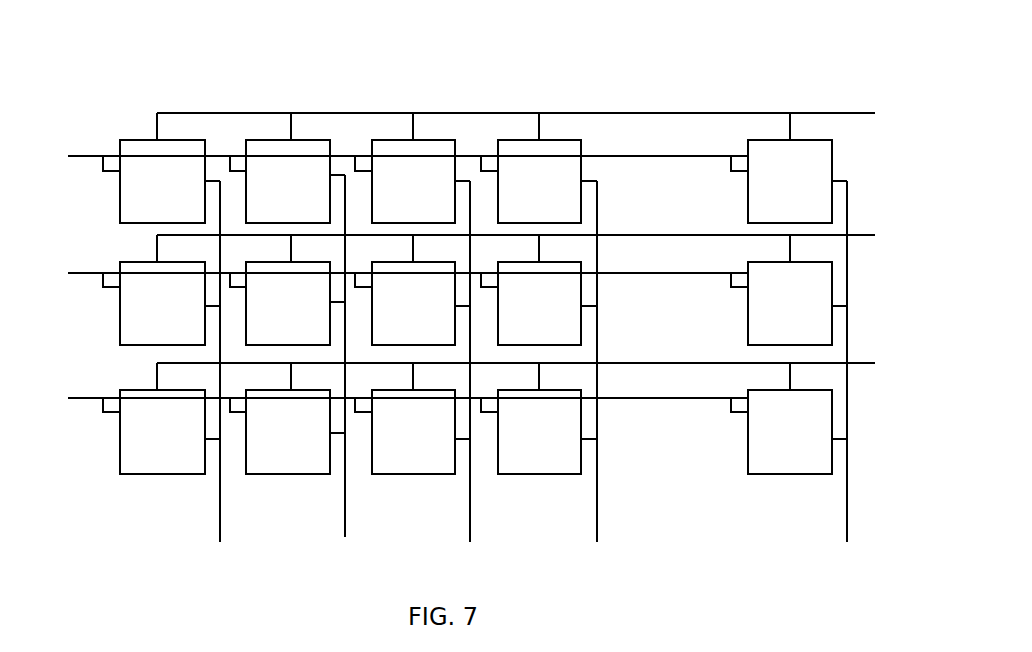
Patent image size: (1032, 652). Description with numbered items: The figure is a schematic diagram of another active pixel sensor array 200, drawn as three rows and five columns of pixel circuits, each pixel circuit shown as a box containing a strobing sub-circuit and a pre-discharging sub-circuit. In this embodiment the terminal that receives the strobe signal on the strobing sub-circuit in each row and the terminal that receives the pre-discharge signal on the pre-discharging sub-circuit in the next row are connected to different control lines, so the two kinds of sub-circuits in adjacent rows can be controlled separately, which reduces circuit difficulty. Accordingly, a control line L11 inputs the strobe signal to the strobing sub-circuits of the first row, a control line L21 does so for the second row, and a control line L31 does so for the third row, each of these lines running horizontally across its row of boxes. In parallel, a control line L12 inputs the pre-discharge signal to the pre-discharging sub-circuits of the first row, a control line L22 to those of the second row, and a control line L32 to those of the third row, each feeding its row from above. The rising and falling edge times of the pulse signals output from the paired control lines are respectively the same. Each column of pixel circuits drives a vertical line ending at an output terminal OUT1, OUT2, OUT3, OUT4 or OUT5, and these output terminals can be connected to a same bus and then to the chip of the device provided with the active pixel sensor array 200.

The active pixel sensor array 200 is at (390, 43).
The control line L11 is at (384, 156).
The control line L12 is at (546, 113).
The control line L21 is at (384, 273).
The control line L22 is at (546, 233).
The control line L31 is at (384, 398).
The control line L32 is at (546, 357).
The output terminal OUT1 is at (213, 377).
The output terminal OUT2 is at (334, 370).
The output terminal OUT3 is at (460, 377).
The output terminal OUT4 is at (587, 377).
The output terminal OUT5 is at (842, 377).